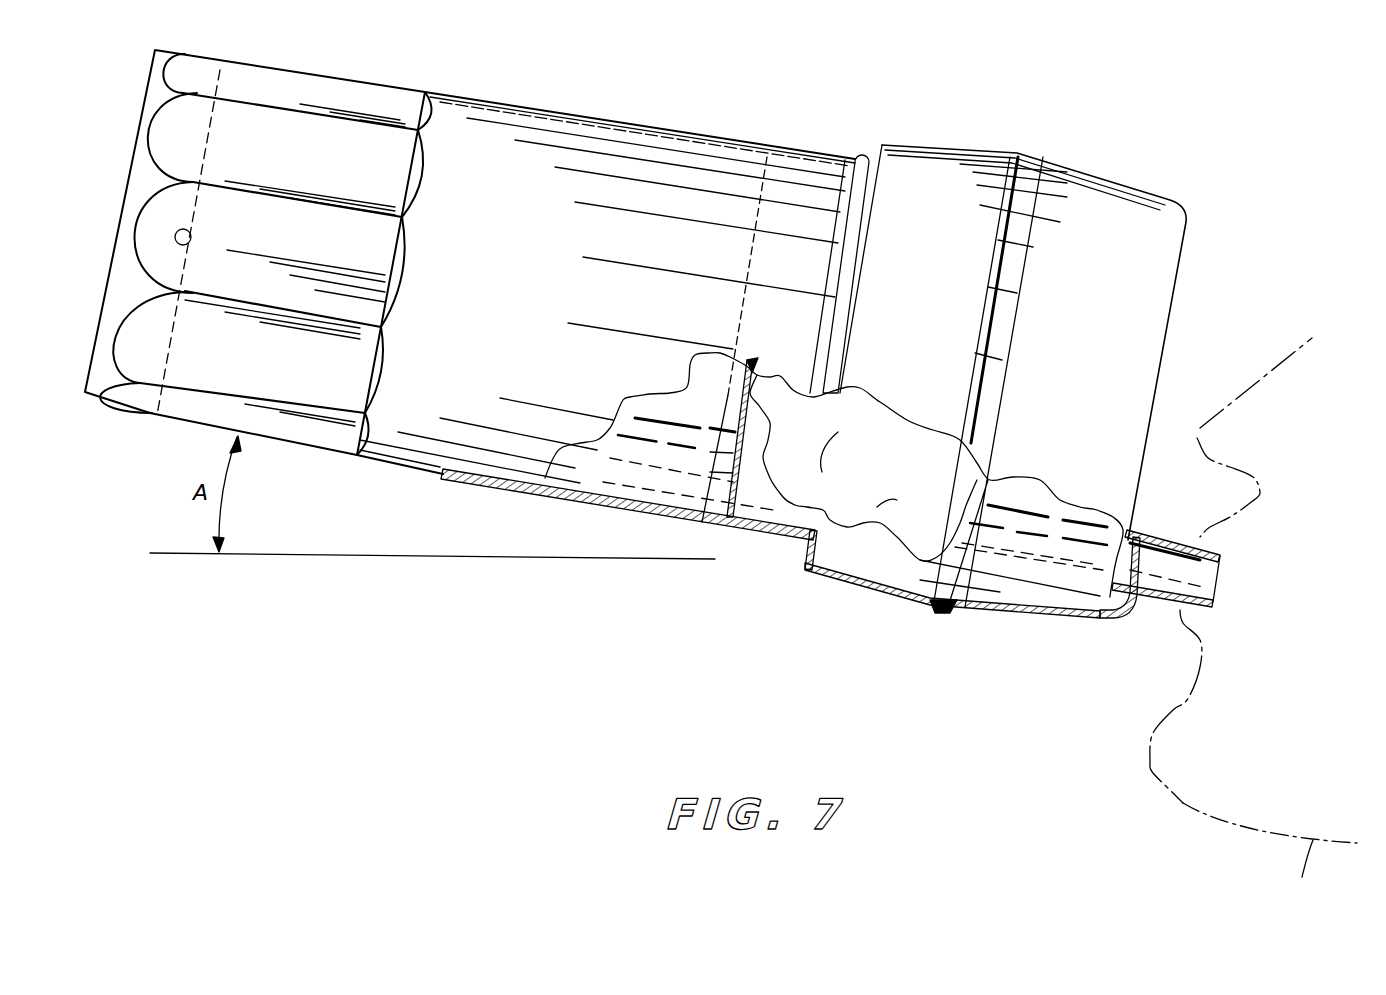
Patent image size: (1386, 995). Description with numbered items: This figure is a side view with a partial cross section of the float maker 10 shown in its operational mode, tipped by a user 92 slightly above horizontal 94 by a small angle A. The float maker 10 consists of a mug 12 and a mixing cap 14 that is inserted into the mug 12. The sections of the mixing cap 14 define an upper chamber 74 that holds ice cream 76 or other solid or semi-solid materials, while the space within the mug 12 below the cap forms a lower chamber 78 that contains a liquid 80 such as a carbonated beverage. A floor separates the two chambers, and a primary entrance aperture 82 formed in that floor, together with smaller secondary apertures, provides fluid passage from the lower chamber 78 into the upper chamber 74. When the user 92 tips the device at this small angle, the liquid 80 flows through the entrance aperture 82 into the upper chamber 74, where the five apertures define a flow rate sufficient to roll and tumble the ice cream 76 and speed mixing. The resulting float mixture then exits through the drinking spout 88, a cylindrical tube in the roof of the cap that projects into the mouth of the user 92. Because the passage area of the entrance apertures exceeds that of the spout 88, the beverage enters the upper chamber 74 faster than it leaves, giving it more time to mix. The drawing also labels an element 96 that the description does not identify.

The float maker 10 is at (790, 110).
The mug 12 is at (393, 85).
The mixing cap 14 is at (1060, 163).
The upper chamber 74 is at (1040, 505).
The ice cream 76 is at (858, 390).
The lower chamber 78 is at (700, 400).
The liquid 80 is at (750, 495).
The primary entrance aperture 82 is at (730, 483).
The drinking spout 88 is at (1147, 532).
The user 92 is at (1187, 800).
The horizontal 94 is at (303, 557).
The step 96 is at (797, 540).